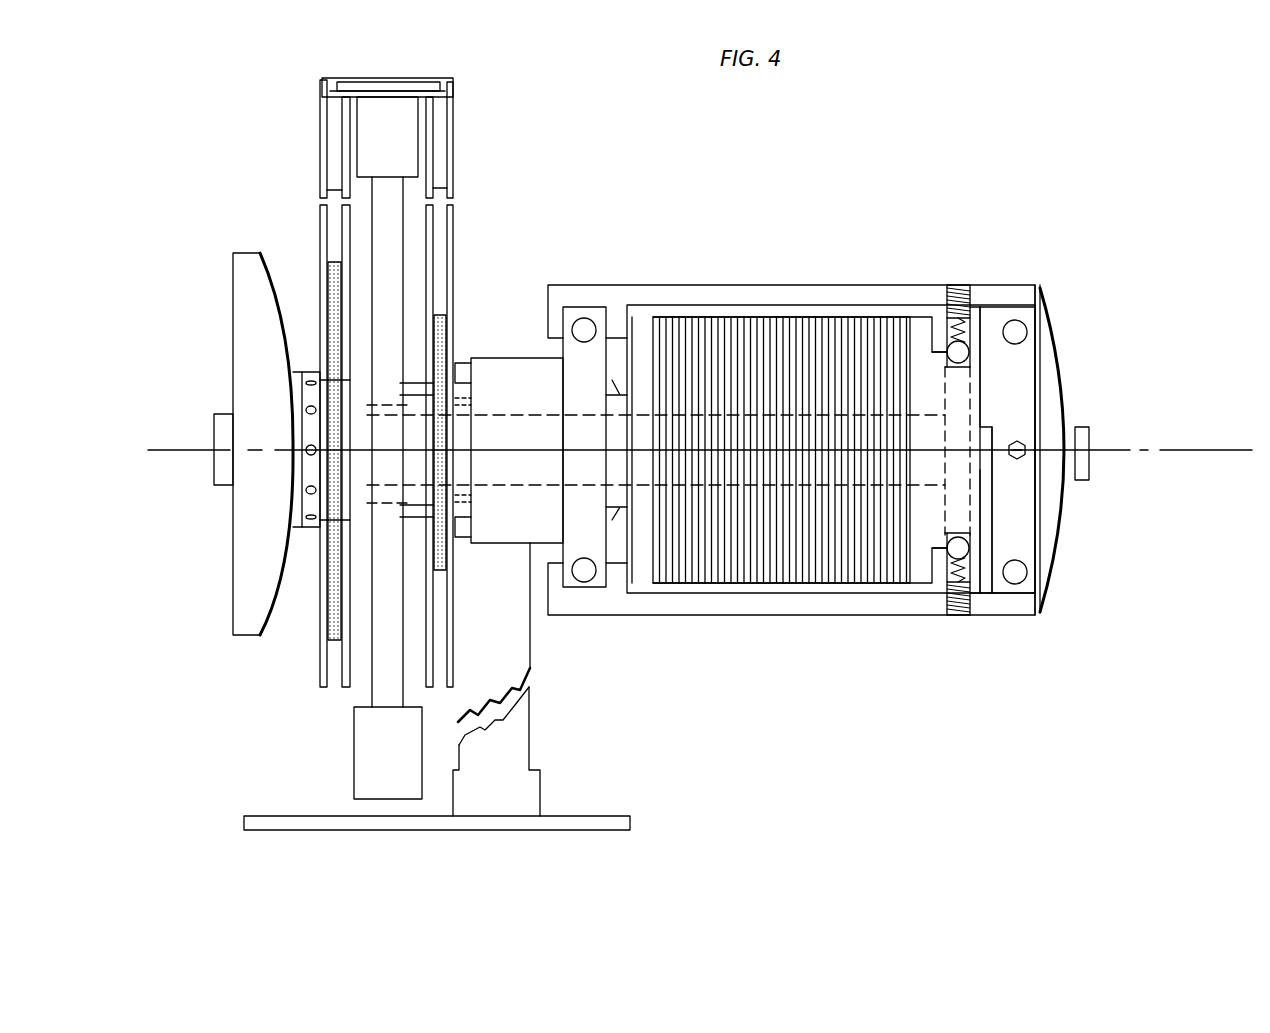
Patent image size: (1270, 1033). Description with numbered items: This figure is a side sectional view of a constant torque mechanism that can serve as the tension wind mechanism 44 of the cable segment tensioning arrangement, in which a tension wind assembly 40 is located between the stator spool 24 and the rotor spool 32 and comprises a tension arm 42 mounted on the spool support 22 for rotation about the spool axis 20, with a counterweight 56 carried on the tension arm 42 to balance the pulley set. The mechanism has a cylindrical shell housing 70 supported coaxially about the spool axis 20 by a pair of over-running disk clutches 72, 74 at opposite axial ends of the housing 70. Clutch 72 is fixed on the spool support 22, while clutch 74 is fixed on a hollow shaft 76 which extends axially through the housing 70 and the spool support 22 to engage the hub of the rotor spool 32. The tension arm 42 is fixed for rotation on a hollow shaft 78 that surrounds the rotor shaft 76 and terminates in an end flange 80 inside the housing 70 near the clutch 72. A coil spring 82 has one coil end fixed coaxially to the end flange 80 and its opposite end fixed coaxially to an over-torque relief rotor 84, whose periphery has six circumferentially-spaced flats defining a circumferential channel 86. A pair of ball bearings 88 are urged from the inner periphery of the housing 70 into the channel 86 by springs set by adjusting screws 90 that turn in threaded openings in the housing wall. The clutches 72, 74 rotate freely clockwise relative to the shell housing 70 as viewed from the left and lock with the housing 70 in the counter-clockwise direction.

The spool axis 20 is at (1192, 450).
The spool support 22 is at (530, 645).
The stator spool 24 is at (458, 232).
The rotor spool 32 is at (318, 237).
The tension wind assembly 40 is at (458, 97).
The tension arm 42 is at (378, 685).
The tension wind mechanism 44 is at (1060, 290).
The counterweight 56 is at (360, 765).
The cylindrical shell housing 70 is at (927, 285).
The over-running disk clutch 72 is at (590, 545).
The over-running disk clutch 74 is at (1020, 512).
The hollow shaft 76 is at (214, 414).
The hollow shaft 78 is at (405, 388).
The end flange 80 is at (640, 565).
The coil spring 82 is at (757, 340).
The over-torque relief rotor 84 is at (920, 330).
The circumferential channel 86 is at (960, 555).
The ball bearings 88 is at (958, 355).
The adjusting screws 90 is at (960, 285).